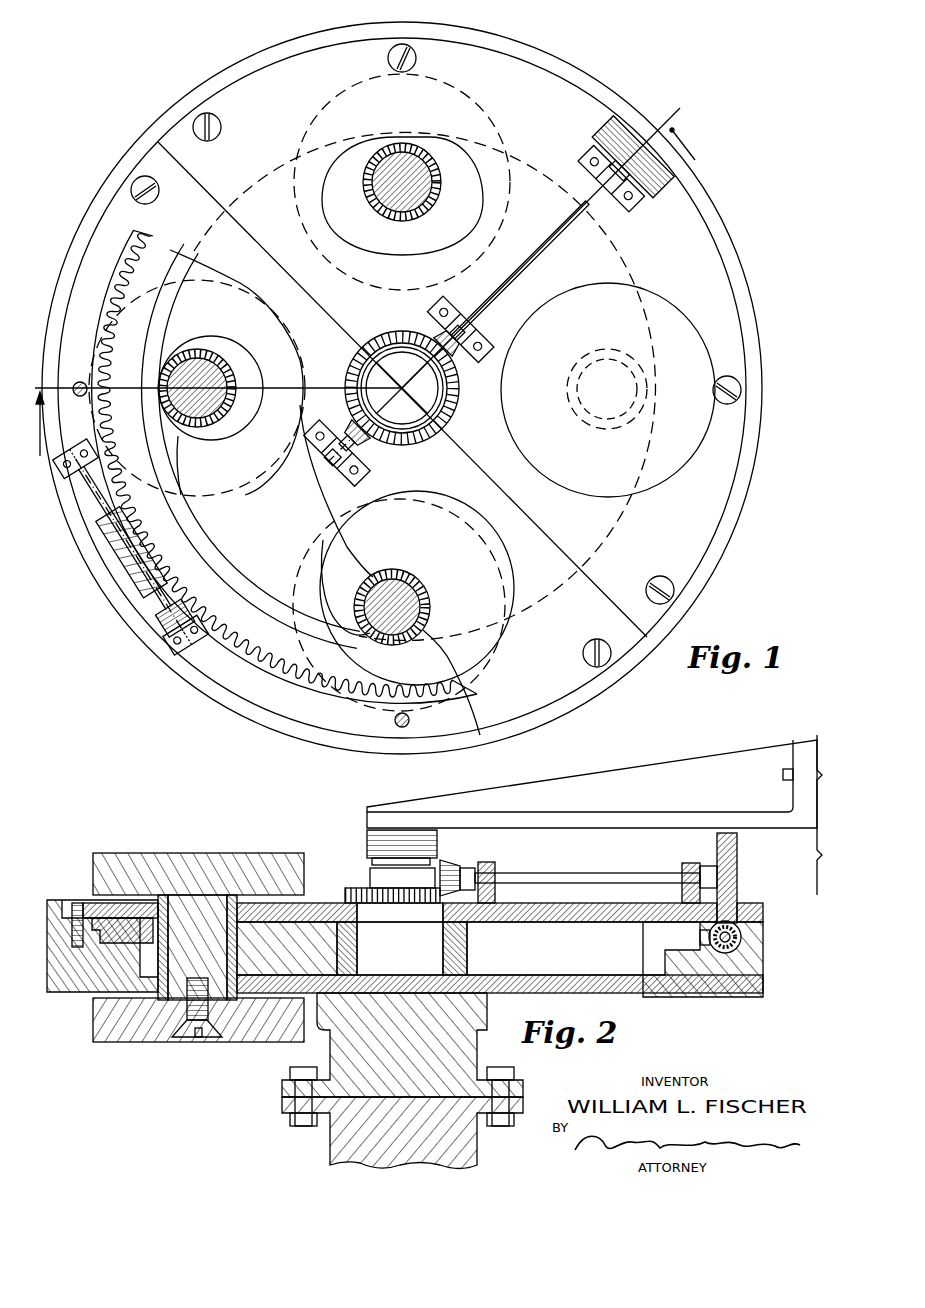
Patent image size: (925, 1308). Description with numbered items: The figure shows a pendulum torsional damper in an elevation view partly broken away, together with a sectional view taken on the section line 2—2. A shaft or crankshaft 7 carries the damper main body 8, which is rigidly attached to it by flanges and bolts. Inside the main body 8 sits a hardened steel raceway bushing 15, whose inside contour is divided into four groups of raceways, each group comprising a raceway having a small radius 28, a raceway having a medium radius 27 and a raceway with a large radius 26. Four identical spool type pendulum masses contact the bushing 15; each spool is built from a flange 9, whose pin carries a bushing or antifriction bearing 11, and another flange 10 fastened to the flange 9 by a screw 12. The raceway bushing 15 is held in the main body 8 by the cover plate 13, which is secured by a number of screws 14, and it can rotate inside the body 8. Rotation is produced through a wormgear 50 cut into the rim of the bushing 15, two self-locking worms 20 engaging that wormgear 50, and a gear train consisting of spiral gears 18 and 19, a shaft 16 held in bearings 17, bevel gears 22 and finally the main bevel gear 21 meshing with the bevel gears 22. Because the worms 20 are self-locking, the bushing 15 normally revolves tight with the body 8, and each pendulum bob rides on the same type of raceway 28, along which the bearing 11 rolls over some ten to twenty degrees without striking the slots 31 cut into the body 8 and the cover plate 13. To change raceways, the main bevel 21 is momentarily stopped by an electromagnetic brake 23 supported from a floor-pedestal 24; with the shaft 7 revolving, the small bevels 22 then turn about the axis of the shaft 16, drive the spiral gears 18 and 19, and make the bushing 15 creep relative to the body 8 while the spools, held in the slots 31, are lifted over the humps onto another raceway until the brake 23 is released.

In FIG. 1, the section line 2— 2 is at (372, 296).
In FIG. 2, the shaft 7 is at (477, 1135).
In FIG. 2, the damper main body 8 is at (305, 975).
In FIG. 2, the flange 9 is at (110, 855).
In FIG. 2, the flange 10 is at (105, 1042).
In FIG. 1, the bushing or antifriction bearing 11 is at (215, 362).
In FIG. 2, the bushing or antifriction bearing 11 is at (240, 935).
In FIG. 2, the screw 12 is at (200, 1040).
In FIG. 2, the cover plate 13 is at (62, 898).
In FIG. 1, the screws 14 is at (405, 52).
In FIG. 2, the screws 14 is at (80, 900).
In FIG. 1, the raceway bushing 15 is at (275, 660).
In FIG. 2, the raceway bushing 15 is at (140, 900).
In FIG. 1, the shaft 16 is at (517, 262).
In FIG. 2, the shaft 16 is at (562, 875).
In FIG. 1, the bearings 17 is at (588, 163).
In FIG. 2, the bearings 17 is at (492, 866).
In FIG. 1, the spiral gear 18 is at (660, 190).
In FIG. 2, the spiral gear 18 is at (735, 870).
In FIG. 1, the spiral gear 19 is at (158, 630).
In FIG. 2, the spiral gear 19 is at (762, 970).
In FIG. 1, the self-locking worm 20 is at (130, 577).
In FIG. 1, the main bevel gear 21 is at (378, 345).
In FIG. 1, the bevel gear 22 is at (455, 365).
In FIG. 2, the bevel gear 22 is at (450, 862).
In FIG. 2, the electromagnetic brake 23 is at (370, 850).
In FIG. 2, the floor-pedestal 24 is at (650, 785).
In FIG. 1, the raceway with a large radius 26 is at (190, 265).
In FIG. 1, the raceway having a medium radius 27 is at (197, 520).
In FIG. 1, the raceway having a small radius 28 is at (163, 363).
In FIG. 1, the slots 31 is at (320, 540).
In FIG. 1, the wormgear 50 is at (235, 658).
In FIG. 2, the wormgear 50 is at (706, 955).